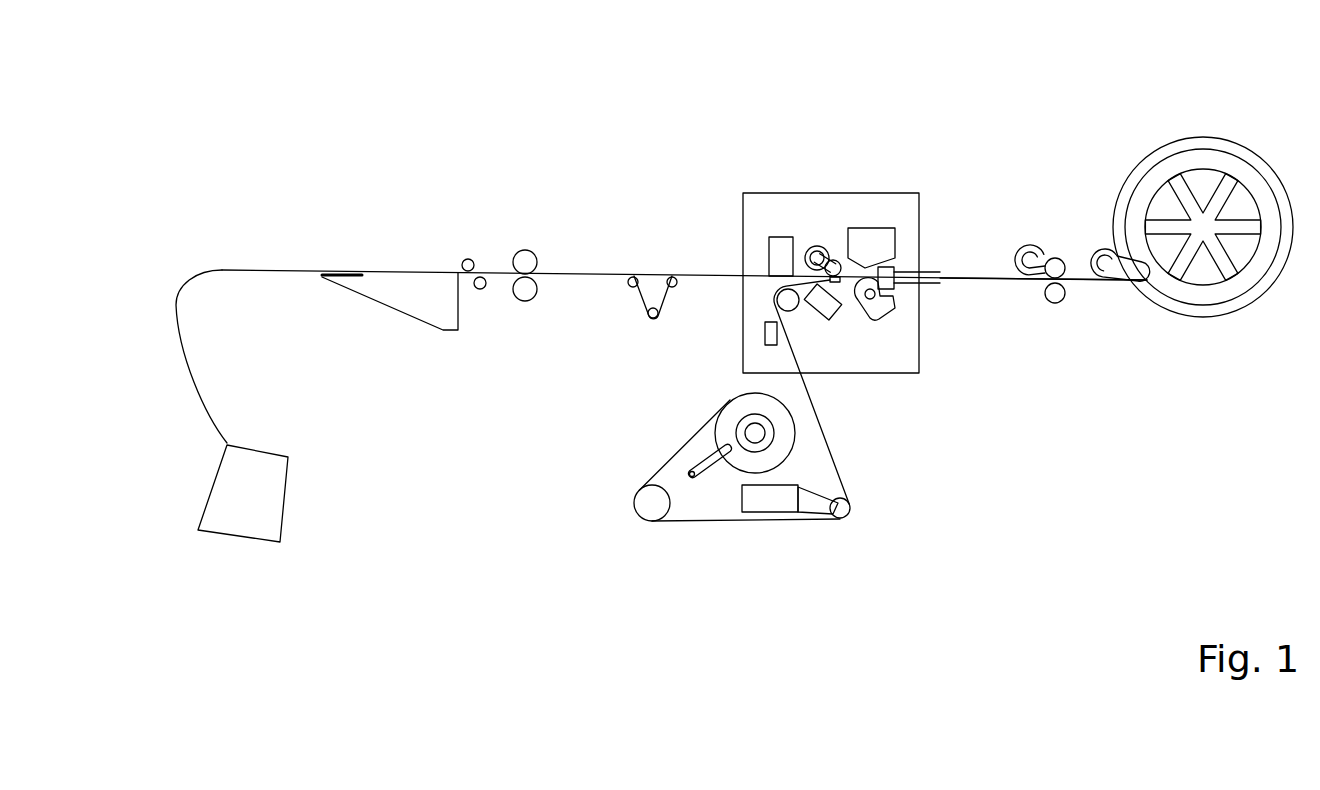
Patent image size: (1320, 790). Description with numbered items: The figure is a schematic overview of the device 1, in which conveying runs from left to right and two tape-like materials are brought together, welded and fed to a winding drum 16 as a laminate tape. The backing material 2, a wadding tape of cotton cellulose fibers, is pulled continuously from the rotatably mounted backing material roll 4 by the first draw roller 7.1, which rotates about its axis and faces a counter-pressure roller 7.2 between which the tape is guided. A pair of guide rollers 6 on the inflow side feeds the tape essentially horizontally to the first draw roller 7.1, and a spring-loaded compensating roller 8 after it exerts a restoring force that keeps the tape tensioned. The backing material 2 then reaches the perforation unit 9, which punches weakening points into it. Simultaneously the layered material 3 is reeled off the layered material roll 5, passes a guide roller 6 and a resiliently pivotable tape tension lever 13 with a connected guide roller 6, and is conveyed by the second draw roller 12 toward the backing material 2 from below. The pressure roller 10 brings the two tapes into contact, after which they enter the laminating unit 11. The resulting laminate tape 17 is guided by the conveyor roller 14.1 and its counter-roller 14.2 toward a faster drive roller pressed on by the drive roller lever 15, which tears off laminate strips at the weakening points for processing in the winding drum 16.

The device 1 is at (188, 176).
The backing material 2 is at (263, 270).
The layered material 3 is at (742, 523).
The backing material roll 4 is at (267, 500).
The layered material roll 5 is at (730, 423).
The guide roller 6 is at (468, 264).
The first draw roller 7.1 is at (518, 262).
The counter-pressure roller 7.2 is at (525, 290).
The compensating roller 8 is at (651, 310).
The perforation unit 9 is at (783, 248).
The pressure roller 10 is at (822, 257).
The laminating unit 11 is at (872, 250).
The second draw roller 12 is at (790, 304).
The tape tension lever 13 is at (815, 505).
The conveyor roller 14.1 is at (1064, 262).
The counter-roller 14.2 is at (1057, 303).
The drive roller lever 15 is at (1108, 266).
The winding drum 16 is at (1262, 262).
The laminate tape 17 is at (987, 278).